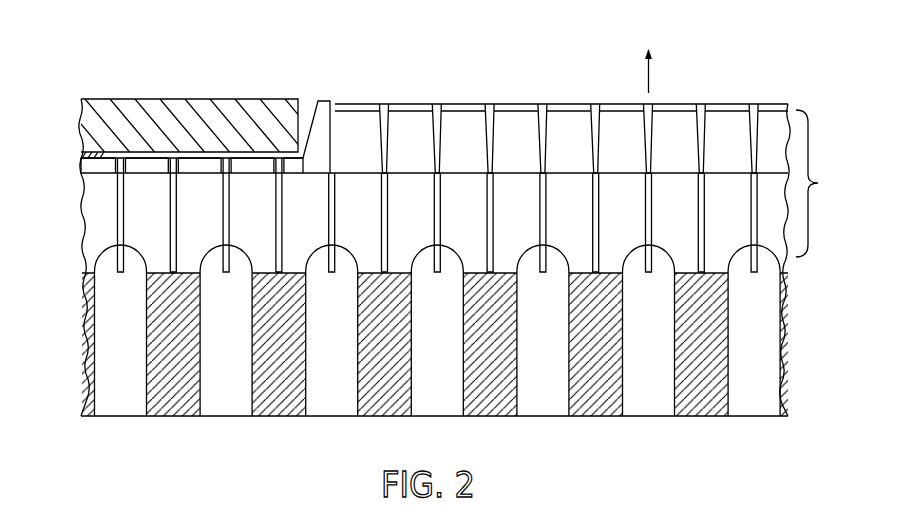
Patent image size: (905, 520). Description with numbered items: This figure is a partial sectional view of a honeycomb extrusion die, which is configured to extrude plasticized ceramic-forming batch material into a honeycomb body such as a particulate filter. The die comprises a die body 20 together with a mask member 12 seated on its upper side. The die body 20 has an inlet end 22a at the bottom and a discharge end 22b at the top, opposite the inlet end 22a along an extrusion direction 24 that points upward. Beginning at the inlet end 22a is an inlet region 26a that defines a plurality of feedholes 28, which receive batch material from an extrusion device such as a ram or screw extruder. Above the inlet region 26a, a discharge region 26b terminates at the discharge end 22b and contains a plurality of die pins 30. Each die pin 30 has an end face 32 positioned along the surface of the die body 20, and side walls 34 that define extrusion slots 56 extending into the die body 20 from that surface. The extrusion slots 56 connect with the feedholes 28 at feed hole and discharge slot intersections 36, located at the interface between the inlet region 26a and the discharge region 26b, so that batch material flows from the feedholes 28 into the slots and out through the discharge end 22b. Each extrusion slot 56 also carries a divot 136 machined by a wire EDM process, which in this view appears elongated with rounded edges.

The mask member 12 is at (182, 99).
The die body 20 is at (74, 223).
The inlet end 22a is at (594, 416).
The discharge end 22b is at (571, 104).
The extrusion direction 24 is at (652, 80).
The inlet region 26a is at (798, 273).
The discharge region 26b is at (829, 183).
The feedholes 28 is at (779, 333).
The die pin 30 is at (340, 80).
The end face 32 is at (380, 97).
The side walls 34 is at (440, 235).
The feed hole and discharge slot intersections 36 is at (134, 266).
The extrusion slots 56 is at (705, 236).
The divot 136 is at (486, 143).